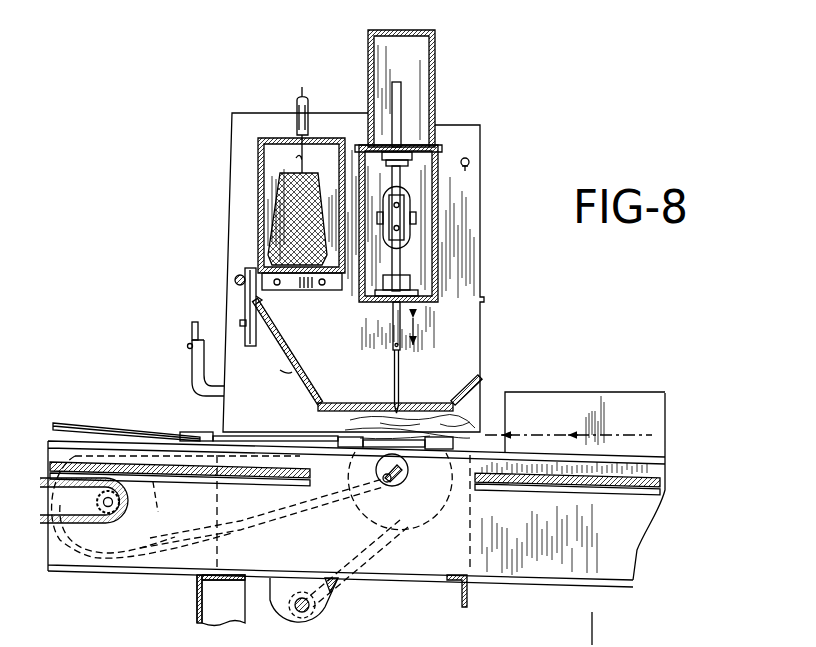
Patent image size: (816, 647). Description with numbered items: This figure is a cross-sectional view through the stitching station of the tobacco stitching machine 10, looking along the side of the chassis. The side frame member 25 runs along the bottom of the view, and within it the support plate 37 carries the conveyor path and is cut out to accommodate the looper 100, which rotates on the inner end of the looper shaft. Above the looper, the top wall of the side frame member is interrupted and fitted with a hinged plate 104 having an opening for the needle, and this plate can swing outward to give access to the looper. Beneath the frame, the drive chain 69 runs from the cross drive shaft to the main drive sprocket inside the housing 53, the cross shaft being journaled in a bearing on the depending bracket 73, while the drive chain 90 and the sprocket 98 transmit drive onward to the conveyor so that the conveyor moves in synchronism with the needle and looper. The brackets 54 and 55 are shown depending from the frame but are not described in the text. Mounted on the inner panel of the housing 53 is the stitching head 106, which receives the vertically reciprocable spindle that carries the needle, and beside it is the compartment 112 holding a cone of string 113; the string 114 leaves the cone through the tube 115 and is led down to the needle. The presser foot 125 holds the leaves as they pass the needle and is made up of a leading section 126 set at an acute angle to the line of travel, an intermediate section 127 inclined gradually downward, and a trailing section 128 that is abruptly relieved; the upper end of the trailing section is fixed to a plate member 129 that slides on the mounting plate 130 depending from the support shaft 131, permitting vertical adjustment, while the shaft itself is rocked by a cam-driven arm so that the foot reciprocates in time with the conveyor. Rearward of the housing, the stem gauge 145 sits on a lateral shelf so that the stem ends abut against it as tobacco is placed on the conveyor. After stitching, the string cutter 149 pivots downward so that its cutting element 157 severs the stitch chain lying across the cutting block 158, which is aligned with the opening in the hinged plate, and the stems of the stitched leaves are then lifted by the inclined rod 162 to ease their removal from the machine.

The sewing machine 10 is at (590, 622).
The side frame member 25 is at (620, 561).
The support plate 37 is at (548, 494).
The housing 53 is at (482, 300).
The bracket 54 is at (457, 603).
The housing 55 is at (196, 588).
The drive chain 69 is at (402, 553).
The depending bracket 73 is at (312, 624).
The drive chain 90 is at (239, 538).
The sprocket 98 is at (134, 510).
The looper 100 is at (408, 478).
The hinged plate 104 is at (336, 414).
The stitching head 106 is at (442, 252).
The compartment 112 is at (256, 212).
The cone of string 113 is at (290, 248).
The string 114 is at (297, 158).
The tube 115 is at (297, 100).
The presser foot 125 is at (300, 357).
The leading section 126 is at (466, 388).
The intermediate section 127 is at (350, 400).
The trailing section 128 is at (292, 372).
The plate member 129 is at (262, 300).
The mounting plate 130 is at (245, 301).
The support shaft 131 is at (235, 280).
The stem gauge 145 is at (598, 392).
The string cutter 149 is at (190, 370).
The cutting element 157 is at (191, 327).
The cutting block 158 is at (195, 431).
The inclined rod 162 is at (95, 422).